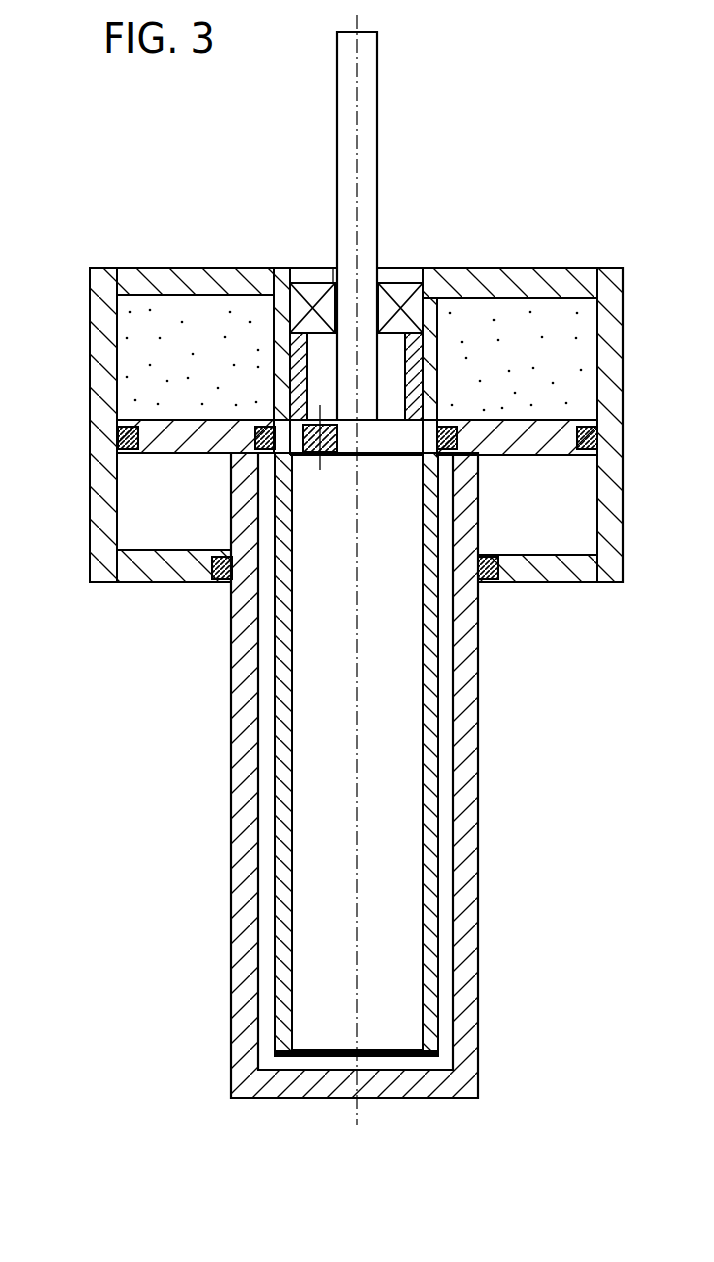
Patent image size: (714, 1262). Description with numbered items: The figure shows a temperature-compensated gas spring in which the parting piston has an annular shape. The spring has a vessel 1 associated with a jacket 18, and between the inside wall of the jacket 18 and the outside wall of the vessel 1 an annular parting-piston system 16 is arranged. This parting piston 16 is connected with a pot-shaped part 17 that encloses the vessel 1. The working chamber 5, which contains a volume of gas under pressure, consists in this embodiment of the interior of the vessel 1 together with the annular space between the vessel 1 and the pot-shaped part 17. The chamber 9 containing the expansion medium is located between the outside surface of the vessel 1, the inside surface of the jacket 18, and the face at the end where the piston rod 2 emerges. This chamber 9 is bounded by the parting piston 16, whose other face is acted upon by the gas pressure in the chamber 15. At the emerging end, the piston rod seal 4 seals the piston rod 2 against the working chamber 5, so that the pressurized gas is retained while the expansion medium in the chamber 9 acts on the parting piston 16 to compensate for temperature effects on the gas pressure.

The vessel 1 is at (283, 781).
The piston rod 2 is at (368, 88).
The piston rod seal 4 is at (313, 293).
The working chamber 5 is at (408, 891).
The chamber containing the expansion medium 9 is at (177, 322).
The chamber 15 is at (562, 510).
The annular parting-piston system 16 is at (528, 432).
The pot-shaped part 17 is at (240, 918).
The jacket 18 is at (103, 410).